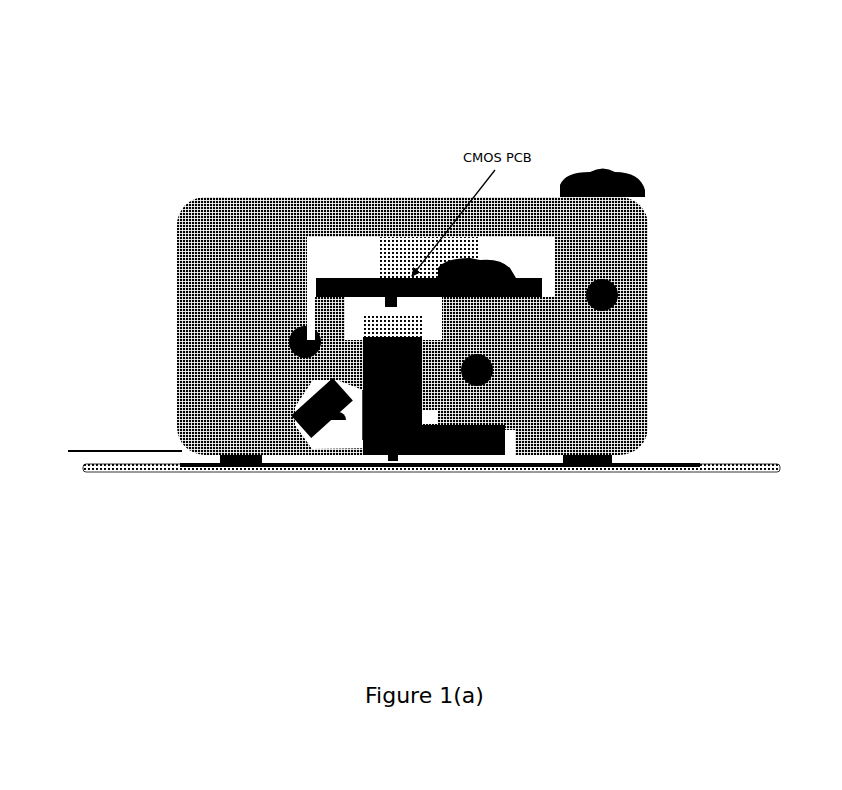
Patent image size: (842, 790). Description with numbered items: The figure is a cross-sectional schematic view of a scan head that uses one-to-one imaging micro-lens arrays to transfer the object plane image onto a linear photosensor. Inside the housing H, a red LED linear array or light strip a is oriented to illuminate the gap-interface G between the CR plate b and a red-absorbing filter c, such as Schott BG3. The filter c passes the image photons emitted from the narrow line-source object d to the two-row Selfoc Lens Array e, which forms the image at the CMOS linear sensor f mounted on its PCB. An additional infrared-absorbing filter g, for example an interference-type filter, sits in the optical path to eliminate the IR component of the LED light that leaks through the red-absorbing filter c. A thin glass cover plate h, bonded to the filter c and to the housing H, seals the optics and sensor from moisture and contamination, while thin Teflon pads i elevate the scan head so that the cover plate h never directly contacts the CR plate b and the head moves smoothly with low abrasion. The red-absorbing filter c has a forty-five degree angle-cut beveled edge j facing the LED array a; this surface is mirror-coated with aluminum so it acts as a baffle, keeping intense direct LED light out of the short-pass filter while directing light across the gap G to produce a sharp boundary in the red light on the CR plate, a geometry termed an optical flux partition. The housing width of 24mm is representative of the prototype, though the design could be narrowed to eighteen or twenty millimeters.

The red LED linear array a is at (336, 417).
The CR plate b is at (431, 461).
The red-absorbing filter c is at (489, 447).
The narrow line-source object d is at (393, 474).
The Selfoc Lens Array e is at (425, 373).
The CMOS linear sensor f is at (399, 304).
The infrared-absorbing filter g is at (364, 312).
The glass cover plate h is at (542, 461).
The Teflon pads i is at (602, 462).
The beveled edge j is at (259, 472).
The housing H is at (650, 275).
The gap-interface G is at (103, 490).
The housing width 24mm is at (177, 195).